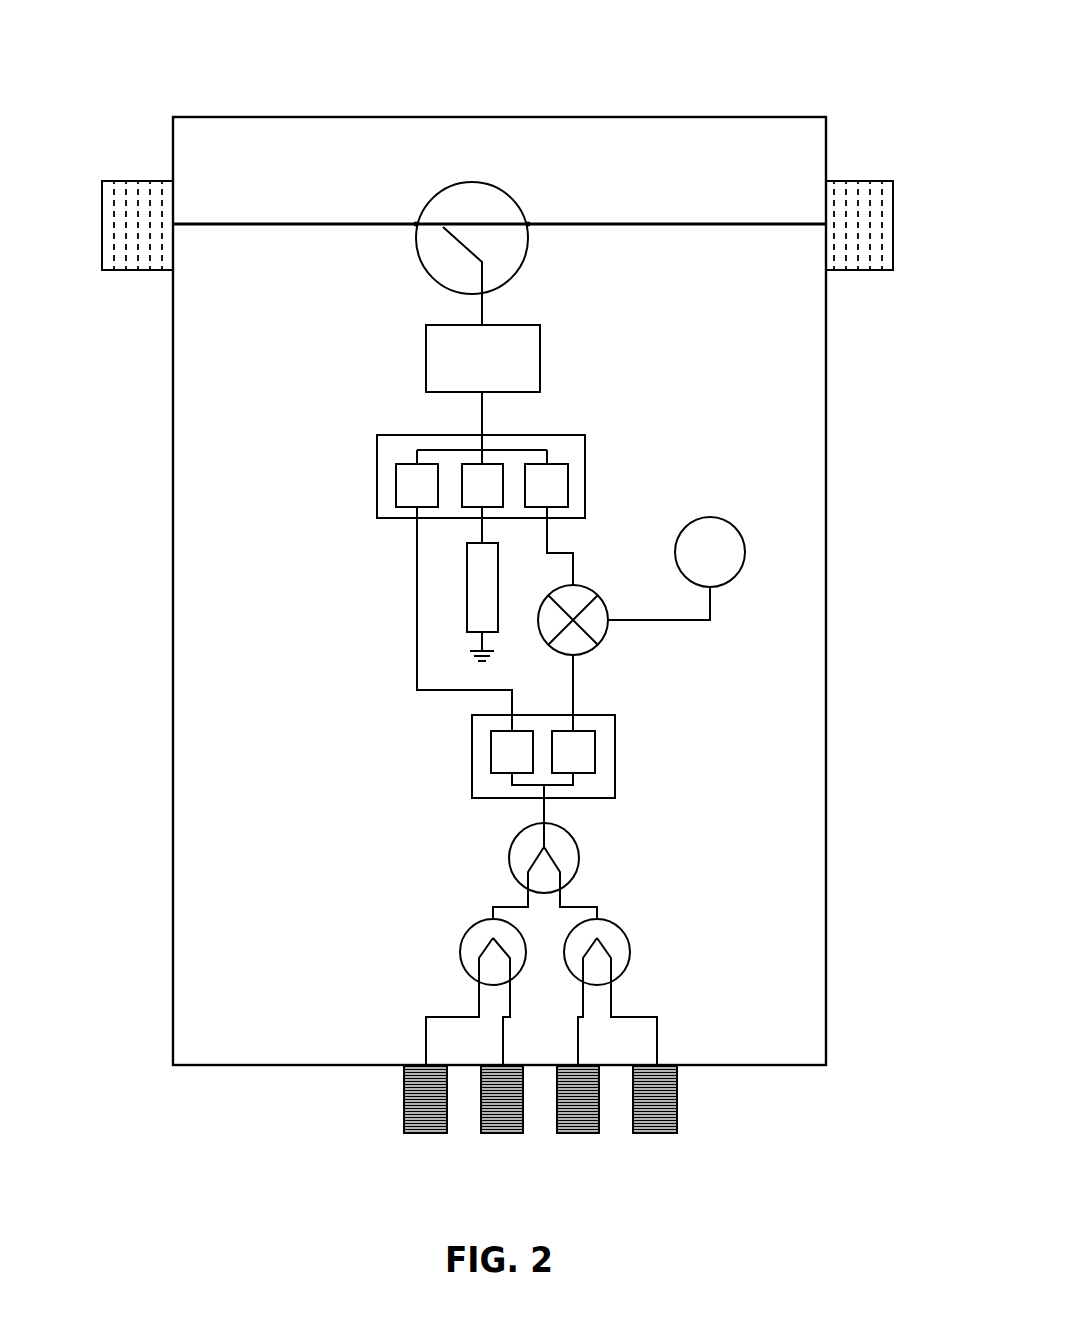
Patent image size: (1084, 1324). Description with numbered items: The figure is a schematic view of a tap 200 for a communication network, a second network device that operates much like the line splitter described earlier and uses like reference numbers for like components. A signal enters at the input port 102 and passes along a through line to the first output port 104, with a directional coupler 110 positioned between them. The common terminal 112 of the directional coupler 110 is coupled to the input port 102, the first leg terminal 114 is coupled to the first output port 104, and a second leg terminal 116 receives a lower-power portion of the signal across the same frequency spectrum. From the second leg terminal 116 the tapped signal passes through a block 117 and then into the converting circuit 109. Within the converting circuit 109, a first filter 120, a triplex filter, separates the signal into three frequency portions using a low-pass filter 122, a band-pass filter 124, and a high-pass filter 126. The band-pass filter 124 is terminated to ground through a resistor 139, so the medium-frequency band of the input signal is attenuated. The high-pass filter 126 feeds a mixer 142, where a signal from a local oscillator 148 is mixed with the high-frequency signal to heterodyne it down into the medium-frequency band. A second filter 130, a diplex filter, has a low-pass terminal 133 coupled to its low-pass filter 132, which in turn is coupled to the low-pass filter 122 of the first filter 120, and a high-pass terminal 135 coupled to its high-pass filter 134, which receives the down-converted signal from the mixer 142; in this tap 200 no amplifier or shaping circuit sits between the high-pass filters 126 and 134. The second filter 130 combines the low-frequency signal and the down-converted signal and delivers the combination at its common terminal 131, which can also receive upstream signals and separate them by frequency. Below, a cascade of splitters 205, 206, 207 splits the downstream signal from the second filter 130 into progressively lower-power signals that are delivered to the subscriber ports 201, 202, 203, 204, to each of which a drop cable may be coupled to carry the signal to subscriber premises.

The tap 200 is at (600, 117).
The input port 102 is at (102, 187).
The first output port 104 is at (893, 193).
The converting circuit 109 is at (712, 448).
The directional coupler 110 is at (497, 250).
The common terminal 112 is at (416, 223).
The first leg terminal 114 is at (530, 228).
The second leg terminal 116 is at (484, 294).
The filter / amplifier block 117 is at (426, 339).
The first filter 120 is at (500, 486).
The low-pass filter 122 is at (405, 502).
The band-pass filter 124 is at (496, 507).
The high-pass filter 126 is at (568, 482).
The resistor 139 is at (499, 617).
The mixer 142 is at (606, 636).
The local oscillator 148 is at (745, 561).
The high-pass terminal 135 is at (577, 715).
The low-pass terminal 133 is at (512, 715).
The second filter 130 is at (570, 774).
The low-pass filter 132 is at (503, 770).
The high-pass filter 134 is at (595, 762).
The common terminal 131 is at (548, 807).
The splitter 205 is at (574, 880).
The splitter 206 is at (461, 943).
The splitter 207 is at (630, 939).
The subscriber port 201 is at (403, 1112).
The subscriber port 202 is at (480, 1117).
The subscriber port 203 is at (598, 1133).
The subscriber port 204 is at (677, 1120).